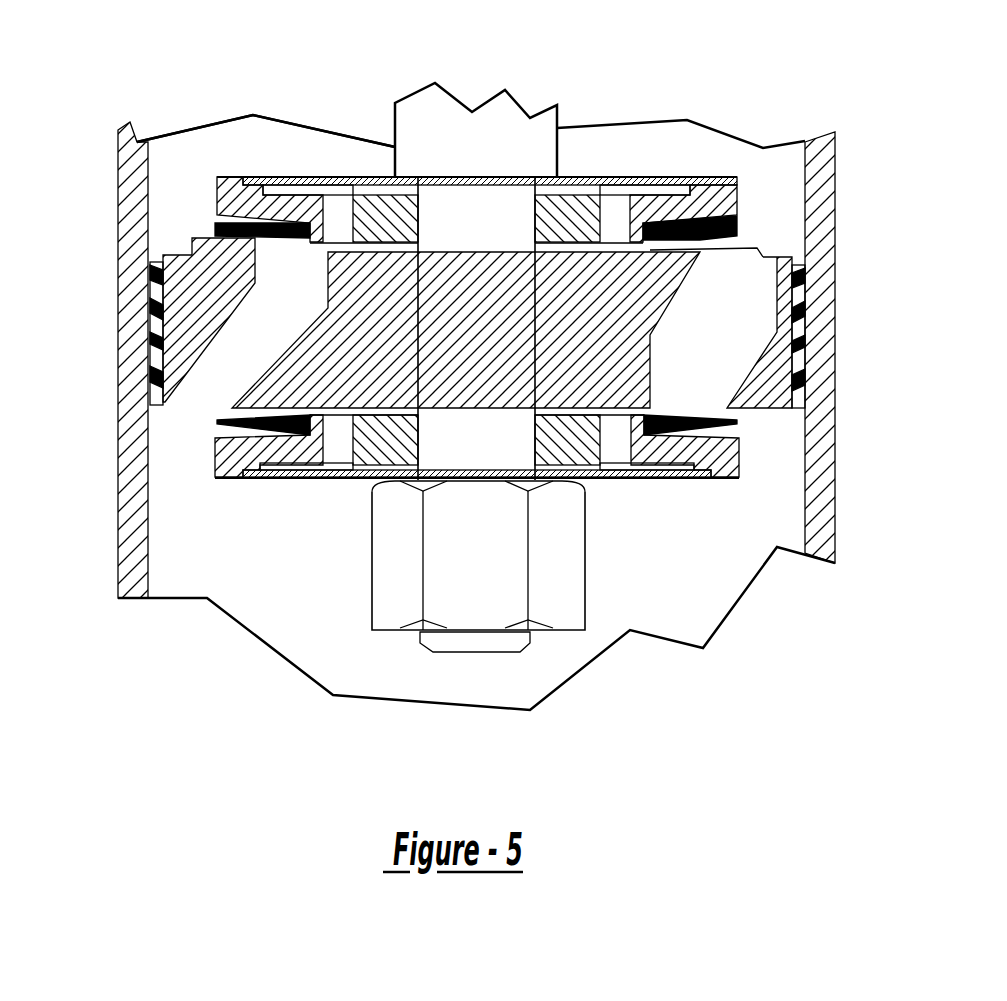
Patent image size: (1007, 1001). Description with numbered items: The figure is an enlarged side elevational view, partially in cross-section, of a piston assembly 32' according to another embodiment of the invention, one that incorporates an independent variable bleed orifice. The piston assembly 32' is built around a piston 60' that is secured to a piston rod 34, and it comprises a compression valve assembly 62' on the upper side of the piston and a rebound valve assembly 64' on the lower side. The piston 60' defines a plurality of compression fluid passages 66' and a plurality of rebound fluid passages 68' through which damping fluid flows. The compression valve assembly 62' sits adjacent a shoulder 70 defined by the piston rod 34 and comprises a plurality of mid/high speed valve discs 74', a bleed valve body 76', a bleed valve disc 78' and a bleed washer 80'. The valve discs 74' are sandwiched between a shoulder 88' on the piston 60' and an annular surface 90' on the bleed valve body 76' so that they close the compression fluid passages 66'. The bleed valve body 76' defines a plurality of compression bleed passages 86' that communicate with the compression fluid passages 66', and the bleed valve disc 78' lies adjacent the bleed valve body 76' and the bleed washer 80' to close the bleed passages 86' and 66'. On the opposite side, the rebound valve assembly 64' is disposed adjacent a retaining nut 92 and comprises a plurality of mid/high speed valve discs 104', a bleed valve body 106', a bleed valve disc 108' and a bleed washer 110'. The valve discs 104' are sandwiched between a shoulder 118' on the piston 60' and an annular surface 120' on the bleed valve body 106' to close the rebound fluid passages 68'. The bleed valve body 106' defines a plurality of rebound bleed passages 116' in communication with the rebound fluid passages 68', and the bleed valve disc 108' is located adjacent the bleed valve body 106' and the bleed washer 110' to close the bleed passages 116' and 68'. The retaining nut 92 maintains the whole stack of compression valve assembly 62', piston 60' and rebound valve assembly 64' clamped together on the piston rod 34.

The piston assembly 32' is at (486, 291).
The piston rod 34 is at (488, 160).
The piston 60' is at (835, 349).
The compression valve assembly 62' is at (266, 80).
The rebound valve assembly 64' is at (476, 416).
The compression fluid passages 66' is at (149, 322).
The rebound fluid passages 68' is at (566, 328).
The shoulder 70 is at (486, 178).
The mid/high speed valve discs 74' is at (606, 230).
The bleed valve body 76' is at (761, 203).
The bleed valve disc 78' is at (244, 140).
The bleed washer 80' is at (490, 109).
The compression bleed passages 86' is at (187, 230).
The shoulder 88' is at (774, 270).
The annular surface 90' is at (174, 322).
The retaining nut 92 is at (548, 553).
The mid/high speed valve discs 104' is at (769, 449).
The bleed valve body 106' is at (766, 484).
The bleed valve disc 108' is at (567, 535).
The bleed washer 110' is at (494, 591).
The rebound bleed passages 116' is at (278, 571).
The shoulder 118' is at (181, 440).
The annular surface 120' is at (377, 486).